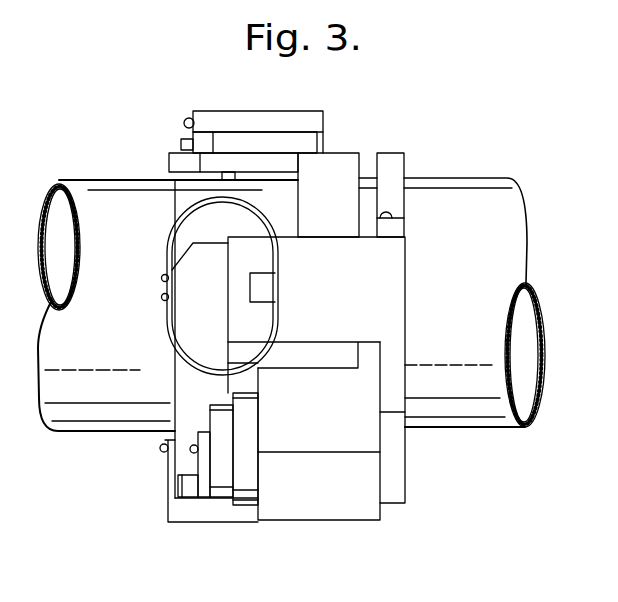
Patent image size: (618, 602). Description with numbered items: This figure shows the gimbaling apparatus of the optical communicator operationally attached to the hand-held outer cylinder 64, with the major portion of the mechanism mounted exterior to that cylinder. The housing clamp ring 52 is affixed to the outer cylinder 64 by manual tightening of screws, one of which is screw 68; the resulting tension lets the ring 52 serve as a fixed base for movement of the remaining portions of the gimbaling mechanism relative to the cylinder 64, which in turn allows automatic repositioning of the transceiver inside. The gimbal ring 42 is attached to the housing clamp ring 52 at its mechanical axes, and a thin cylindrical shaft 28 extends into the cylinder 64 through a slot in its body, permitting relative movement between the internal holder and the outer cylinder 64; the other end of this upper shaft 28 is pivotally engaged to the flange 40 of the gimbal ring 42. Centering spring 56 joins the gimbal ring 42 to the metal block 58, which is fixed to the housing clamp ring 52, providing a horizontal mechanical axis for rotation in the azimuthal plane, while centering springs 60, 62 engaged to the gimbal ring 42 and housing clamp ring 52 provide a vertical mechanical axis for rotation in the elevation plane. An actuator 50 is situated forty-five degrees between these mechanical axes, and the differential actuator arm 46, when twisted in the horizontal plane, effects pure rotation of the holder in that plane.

The shaft 28 is at (219, 176).
The flange 40 is at (181, 145).
The gimbal ring 42 is at (347, 160).
The differential actuator arm 46 is at (185, 489).
The actuator 50 is at (324, 509).
The housing clamp ring 52 is at (397, 157).
The centering spring 56 is at (172, 235).
The metal block 58 is at (260, 280).
The centering spring 60 is at (194, 116).
The centering spring 62 is at (205, 514).
The outer cylinder 64 is at (472, 408).
The screw 68 is at (392, 213).